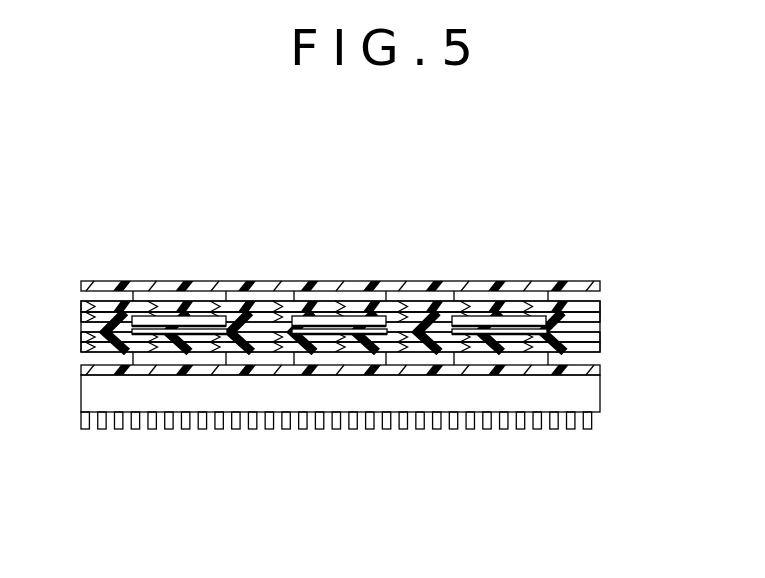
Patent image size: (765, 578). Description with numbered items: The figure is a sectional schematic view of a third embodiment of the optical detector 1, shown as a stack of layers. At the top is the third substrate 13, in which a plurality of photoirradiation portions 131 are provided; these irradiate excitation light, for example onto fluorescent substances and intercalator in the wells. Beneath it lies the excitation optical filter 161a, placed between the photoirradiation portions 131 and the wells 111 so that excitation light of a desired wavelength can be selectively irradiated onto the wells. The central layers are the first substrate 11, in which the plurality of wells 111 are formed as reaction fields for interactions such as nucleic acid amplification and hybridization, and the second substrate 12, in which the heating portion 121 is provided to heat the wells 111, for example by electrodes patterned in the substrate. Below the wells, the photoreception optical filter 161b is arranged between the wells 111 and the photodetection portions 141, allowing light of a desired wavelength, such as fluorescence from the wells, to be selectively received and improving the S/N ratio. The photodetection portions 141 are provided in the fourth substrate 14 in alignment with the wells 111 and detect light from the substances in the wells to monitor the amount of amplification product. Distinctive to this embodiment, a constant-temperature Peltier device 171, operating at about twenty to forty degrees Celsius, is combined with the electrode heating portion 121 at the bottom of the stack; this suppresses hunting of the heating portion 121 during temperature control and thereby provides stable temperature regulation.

The optical detector 1 is at (165, 207).
The first substrate 11 is at (600, 318).
The second substrate 12 is at (600, 340).
The third substrate 13 is at (600, 285).
The fourth substrate 14 is at (600, 372).
The wells 111 is at (150, 320).
The heating portion 121 is at (148, 334).
The photoirradiation portions 131 is at (199, 294).
The photodetection portions 141 is at (185, 357).
The excitation optical filter 161a is at (600, 299).
The photoreception optical filter 161b is at (600, 353).
The Peltier device 171 is at (600, 395).